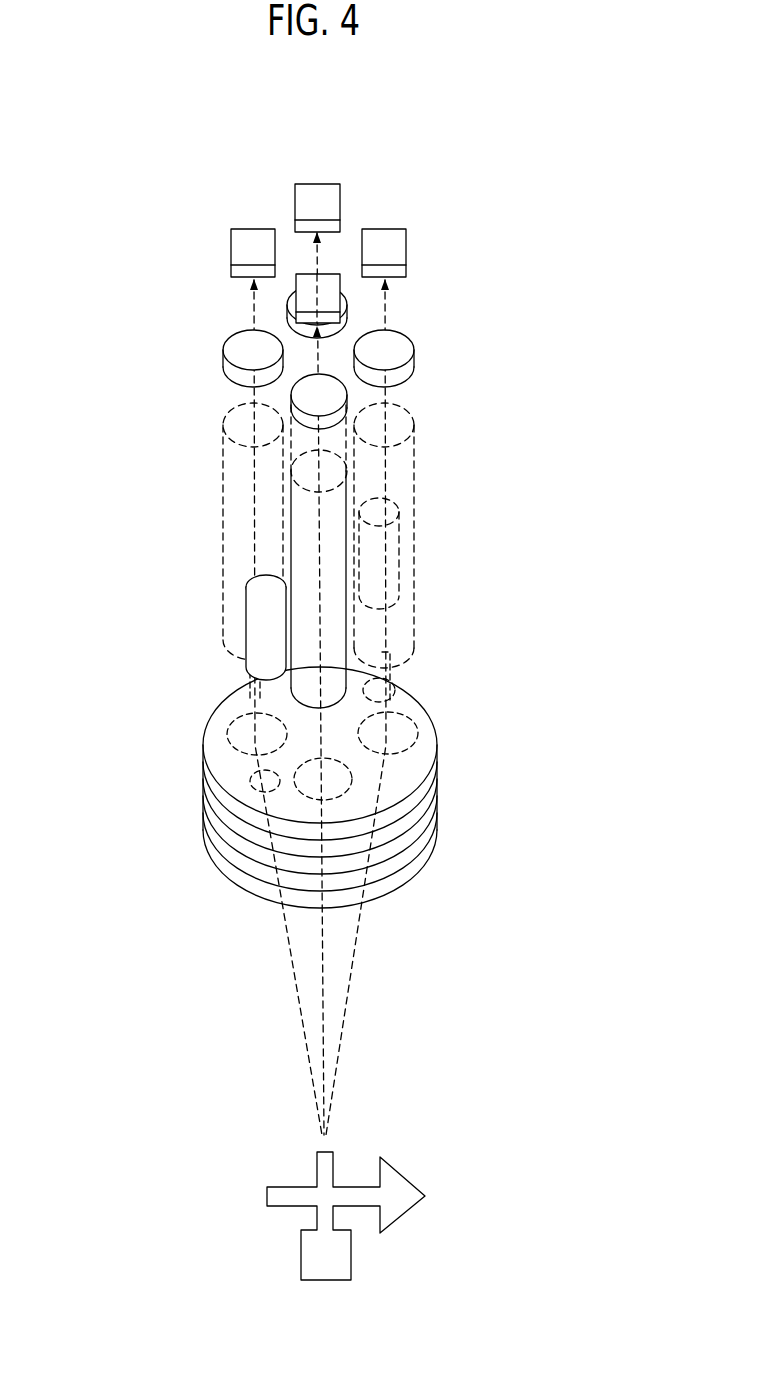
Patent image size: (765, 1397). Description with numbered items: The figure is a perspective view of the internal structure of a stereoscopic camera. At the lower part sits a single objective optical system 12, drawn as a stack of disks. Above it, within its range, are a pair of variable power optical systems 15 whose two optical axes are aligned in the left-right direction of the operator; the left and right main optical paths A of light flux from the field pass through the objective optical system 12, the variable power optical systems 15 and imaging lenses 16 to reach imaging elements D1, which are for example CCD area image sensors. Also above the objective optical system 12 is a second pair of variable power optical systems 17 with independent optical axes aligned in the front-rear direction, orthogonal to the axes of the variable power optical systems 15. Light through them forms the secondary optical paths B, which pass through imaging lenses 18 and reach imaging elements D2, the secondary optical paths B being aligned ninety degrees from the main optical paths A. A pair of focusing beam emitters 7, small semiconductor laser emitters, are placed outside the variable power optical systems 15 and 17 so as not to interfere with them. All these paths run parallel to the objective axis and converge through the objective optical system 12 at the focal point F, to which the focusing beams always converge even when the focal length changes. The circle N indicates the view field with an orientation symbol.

The focusing beam emitter 7 is at (246, 621).
The objective optical system 12 is at (168, 728).
The variable power optical system 15 is at (347, 453).
The imaging lens 16 is at (347, 318).
The variable power optical system 17 is at (223, 515).
The imaging lens 18 is at (223, 348).
The imaging element D1 is at (320, 184).
The imaging element D2 is at (231, 240).
The main optical path A is at (303, 250).
The secondary optical path B is at (243, 302).
The focal point F is at (324, 1137).
The circle N is at (412, 1160).